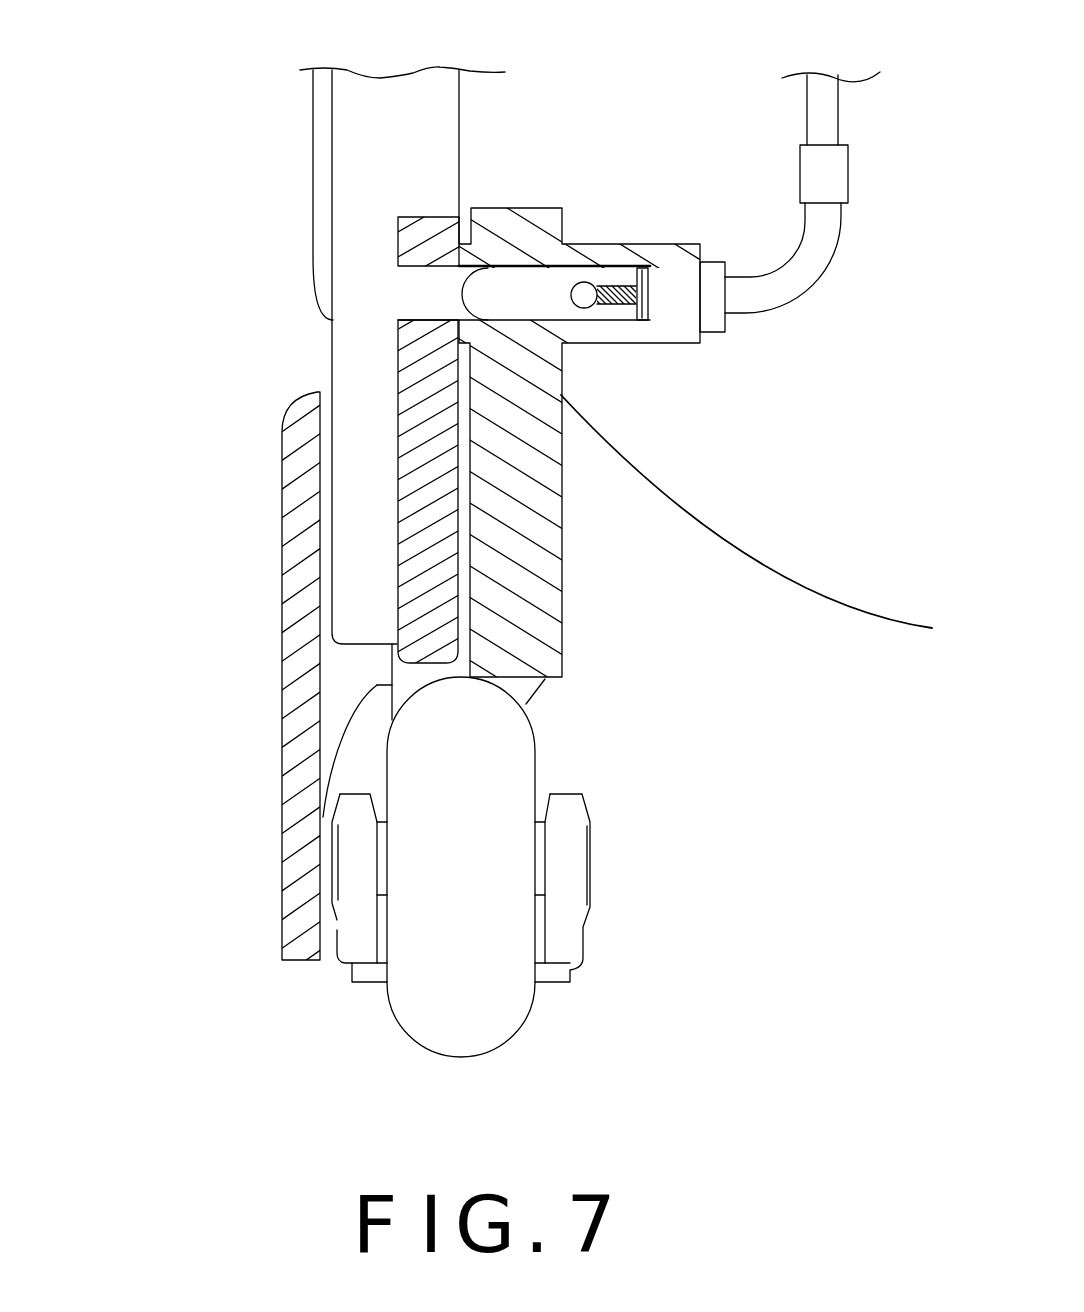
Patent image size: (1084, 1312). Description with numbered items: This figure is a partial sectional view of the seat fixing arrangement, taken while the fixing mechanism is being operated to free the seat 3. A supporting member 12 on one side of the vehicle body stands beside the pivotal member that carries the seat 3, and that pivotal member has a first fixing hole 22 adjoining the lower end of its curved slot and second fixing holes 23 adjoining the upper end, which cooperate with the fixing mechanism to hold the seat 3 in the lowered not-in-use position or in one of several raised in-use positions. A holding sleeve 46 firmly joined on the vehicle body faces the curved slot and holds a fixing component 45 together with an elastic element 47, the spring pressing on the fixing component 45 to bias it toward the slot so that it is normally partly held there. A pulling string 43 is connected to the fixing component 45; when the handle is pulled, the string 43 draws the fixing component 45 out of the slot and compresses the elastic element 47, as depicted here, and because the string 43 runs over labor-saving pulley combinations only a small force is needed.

The seat 3 is at (787, 537).
The supporting member 12 is at (290, 468).
The first fixing hole 22 is at (242, 357).
The second fixing hole 23 is at (417, 320).
The pulling string 43 is at (613, 290).
The fixing component 45 is at (490, 285).
The holding sleeve 46 is at (530, 230).
The elastic element 47 is at (641, 340).